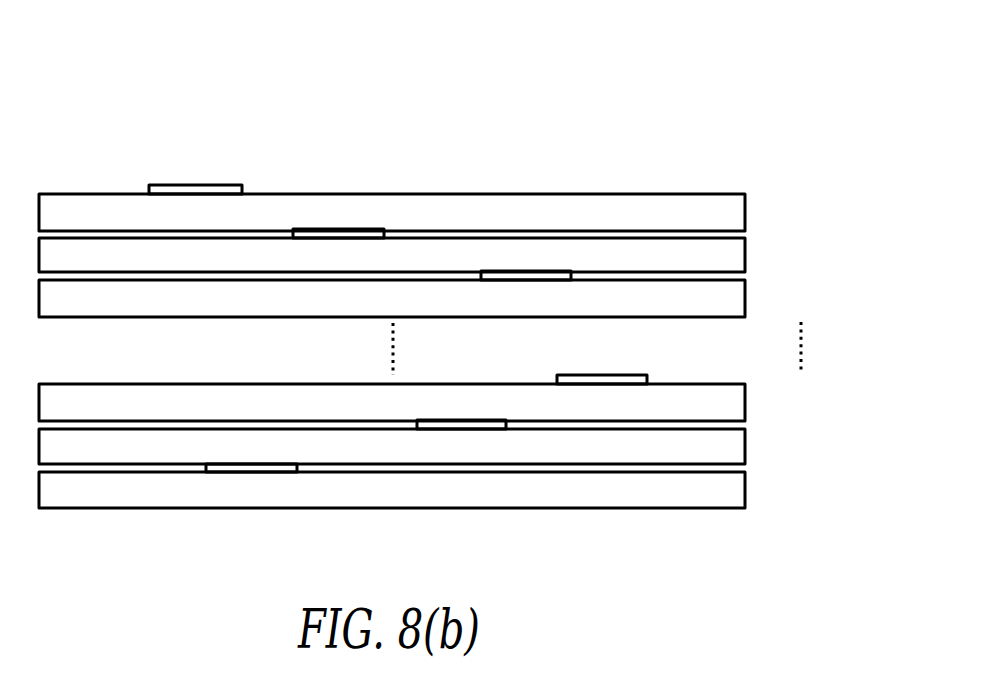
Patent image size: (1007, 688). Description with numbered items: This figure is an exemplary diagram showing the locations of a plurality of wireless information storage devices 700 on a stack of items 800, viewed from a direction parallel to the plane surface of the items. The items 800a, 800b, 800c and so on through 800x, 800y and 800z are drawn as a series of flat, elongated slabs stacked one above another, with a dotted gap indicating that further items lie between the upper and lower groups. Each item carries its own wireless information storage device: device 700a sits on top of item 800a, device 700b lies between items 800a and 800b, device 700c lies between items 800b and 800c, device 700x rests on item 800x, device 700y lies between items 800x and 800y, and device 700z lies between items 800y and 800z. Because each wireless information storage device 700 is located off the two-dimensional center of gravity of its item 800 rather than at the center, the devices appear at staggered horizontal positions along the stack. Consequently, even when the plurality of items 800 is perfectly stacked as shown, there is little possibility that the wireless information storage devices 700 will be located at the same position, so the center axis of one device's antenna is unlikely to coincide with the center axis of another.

The wireless information storage device 700 is at (461, 136).
The wireless information storage device 700a is at (196, 185).
The wireless information storage device 700b is at (334, 229).
The wireless information storage device 700c is at (524, 271).
The wireless information storage device 700x is at (612, 384).
The wireless information storage device 700y is at (470, 429).
The wireless information storage device 700z is at (257, 472).
The item 800 is at (767, 508).
The item 800a is at (741, 212).
The item 800b is at (741, 254).
The item 800c is at (741, 298).
The item 800x is at (741, 405).
The item 800y is at (741, 449).
The item 800z is at (741, 492).